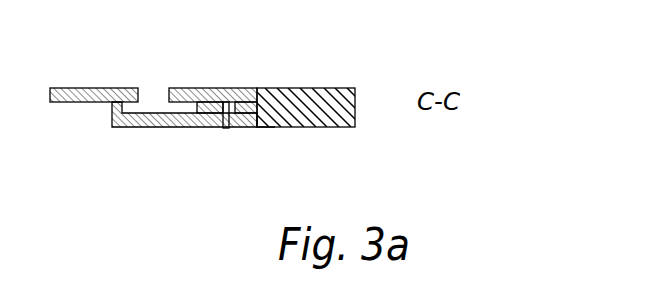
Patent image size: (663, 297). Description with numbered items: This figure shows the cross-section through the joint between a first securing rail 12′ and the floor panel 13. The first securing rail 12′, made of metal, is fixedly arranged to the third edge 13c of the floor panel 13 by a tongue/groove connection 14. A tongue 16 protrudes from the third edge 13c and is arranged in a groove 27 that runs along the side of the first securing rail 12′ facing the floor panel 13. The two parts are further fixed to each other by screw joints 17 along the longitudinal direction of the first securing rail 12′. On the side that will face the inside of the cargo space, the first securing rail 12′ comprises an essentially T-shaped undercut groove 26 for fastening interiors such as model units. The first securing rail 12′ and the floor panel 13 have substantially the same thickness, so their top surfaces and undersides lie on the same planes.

The undercut groove 26 is at (153, 103).
The first securing rail 12′ is at (203, 89).
The groove 27 is at (211, 97).
The tongue 16 is at (233, 98).
The screw joints 17 is at (227, 129).
The floor panel 13 is at (357, 107).
The third edge 13c is at (262, 108).
The tongue/groove connection 14 is at (247, 140).